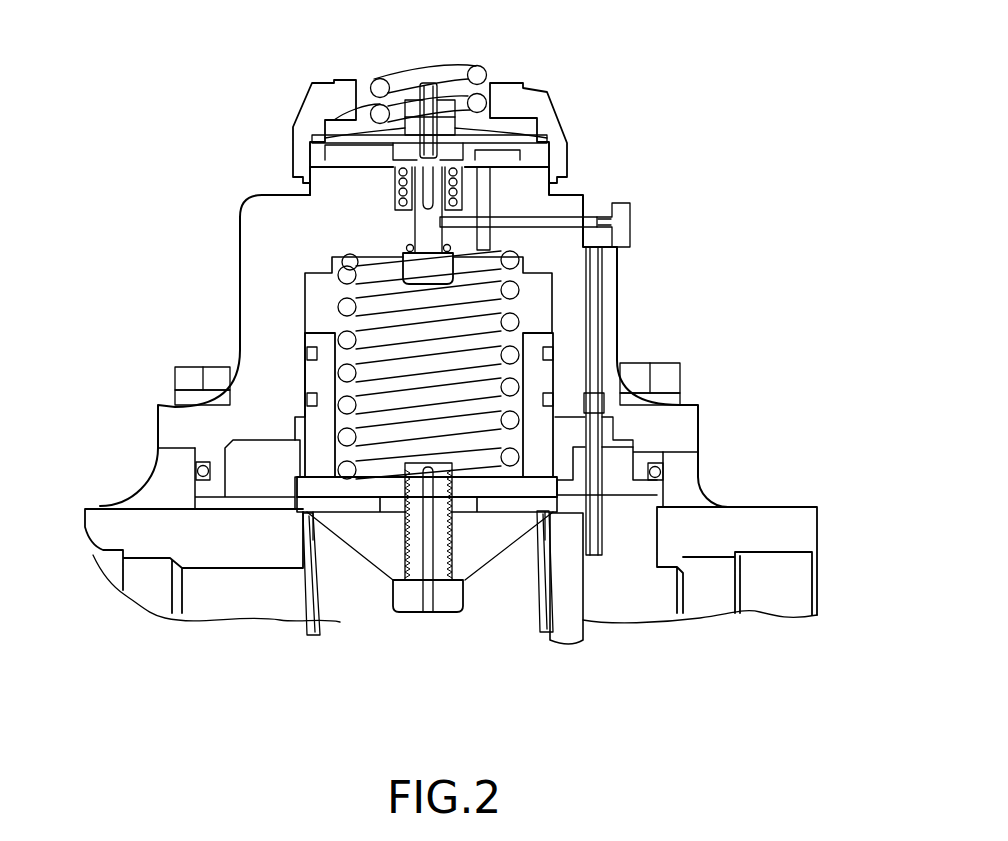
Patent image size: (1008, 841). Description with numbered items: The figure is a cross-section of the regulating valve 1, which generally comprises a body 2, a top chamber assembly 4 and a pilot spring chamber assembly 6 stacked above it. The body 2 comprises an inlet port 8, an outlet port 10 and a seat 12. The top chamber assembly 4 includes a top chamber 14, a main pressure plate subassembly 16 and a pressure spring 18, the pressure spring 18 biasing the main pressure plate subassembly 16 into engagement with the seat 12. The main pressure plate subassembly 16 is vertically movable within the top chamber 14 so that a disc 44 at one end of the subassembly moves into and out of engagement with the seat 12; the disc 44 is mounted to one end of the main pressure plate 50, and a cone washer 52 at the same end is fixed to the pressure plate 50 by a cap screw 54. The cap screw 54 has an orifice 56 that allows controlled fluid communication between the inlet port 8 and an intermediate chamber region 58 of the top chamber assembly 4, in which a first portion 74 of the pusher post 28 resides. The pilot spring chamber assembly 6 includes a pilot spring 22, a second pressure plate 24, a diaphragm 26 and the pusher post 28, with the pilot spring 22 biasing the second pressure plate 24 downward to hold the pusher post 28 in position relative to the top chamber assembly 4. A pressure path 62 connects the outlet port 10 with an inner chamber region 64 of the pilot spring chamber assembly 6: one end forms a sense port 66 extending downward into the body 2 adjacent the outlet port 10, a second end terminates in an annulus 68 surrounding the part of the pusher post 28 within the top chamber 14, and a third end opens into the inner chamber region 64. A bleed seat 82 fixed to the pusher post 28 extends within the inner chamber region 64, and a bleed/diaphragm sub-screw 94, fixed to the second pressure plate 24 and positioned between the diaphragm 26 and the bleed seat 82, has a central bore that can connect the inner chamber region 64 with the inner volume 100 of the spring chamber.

The regulating valve 1 is at (137, 185).
The body 2 is at (108, 498).
The top chamber assembly 4 is at (735, 247).
The pilot spring chamber assembly 6 is at (705, 78).
The inlet port 8 is at (96, 600).
The outlet port 10 is at (832, 585).
The seat 12 is at (307, 510).
The top chamber 14 is at (610, 297).
The main pressure plate subassembly 16 is at (540, 443).
The pressure spring 18 is at (530, 390).
The pilot spring 22 is at (482, 100).
The second pressure plate 24 is at (457, 123).
The diaphragm 26 is at (500, 138).
The pusher post 28 is at (410, 263).
The disc 44 is at (520, 505).
The main pressure plate 50 is at (350, 490).
The cone washer 52 is at (480, 553).
The cap screw 54 is at (410, 603).
The orifice 56 is at (425, 458).
The intermediate chamber region 58 is at (323, 306).
The pressure path 62 is at (552, 188).
The inner chamber region 64 is at (513, 157).
The sense port 66 is at (595, 543).
The annulus 68 is at (420, 218).
The first portion of the pusher post 74 is at (515, 228).
The bleed seat 82 is at (423, 178).
The bleed/diaphragm sub-screw 94 is at (437, 93).
The inner volume of the spring chamber 100 is at (363, 97).